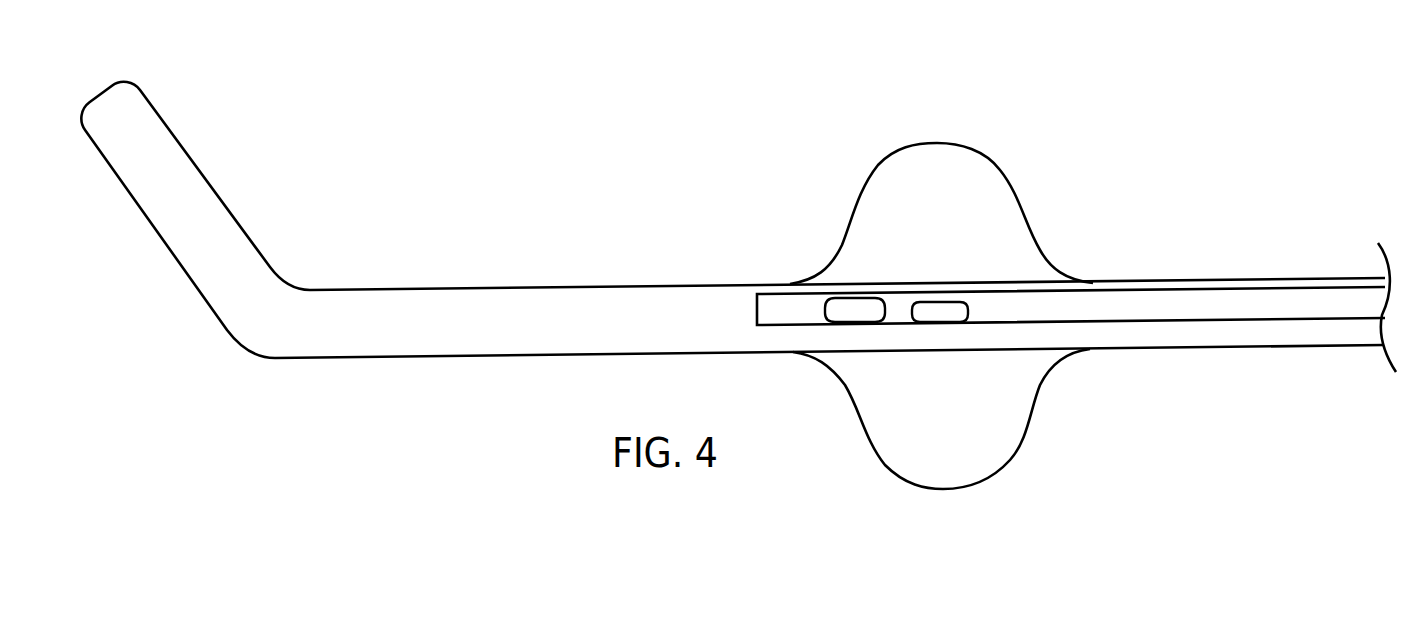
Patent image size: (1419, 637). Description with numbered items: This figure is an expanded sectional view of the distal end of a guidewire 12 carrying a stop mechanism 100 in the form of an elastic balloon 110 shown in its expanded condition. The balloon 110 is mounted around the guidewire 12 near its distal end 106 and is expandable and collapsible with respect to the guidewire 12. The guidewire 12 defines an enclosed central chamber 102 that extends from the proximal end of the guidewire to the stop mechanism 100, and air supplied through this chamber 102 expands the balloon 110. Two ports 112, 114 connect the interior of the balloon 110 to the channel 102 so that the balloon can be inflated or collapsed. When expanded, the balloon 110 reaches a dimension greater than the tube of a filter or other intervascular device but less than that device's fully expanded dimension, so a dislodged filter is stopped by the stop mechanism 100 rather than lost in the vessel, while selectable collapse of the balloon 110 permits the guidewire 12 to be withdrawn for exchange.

The guidewire 12 is at (1240, 277).
The stop mechanism 100 is at (1082, 196).
The central chamber 102 is at (1152, 298).
The distal end of the guidewire 106 is at (203, 200).
The balloon 110 is at (860, 198).
The port 112 is at (943, 303).
The port 114 is at (850, 312).